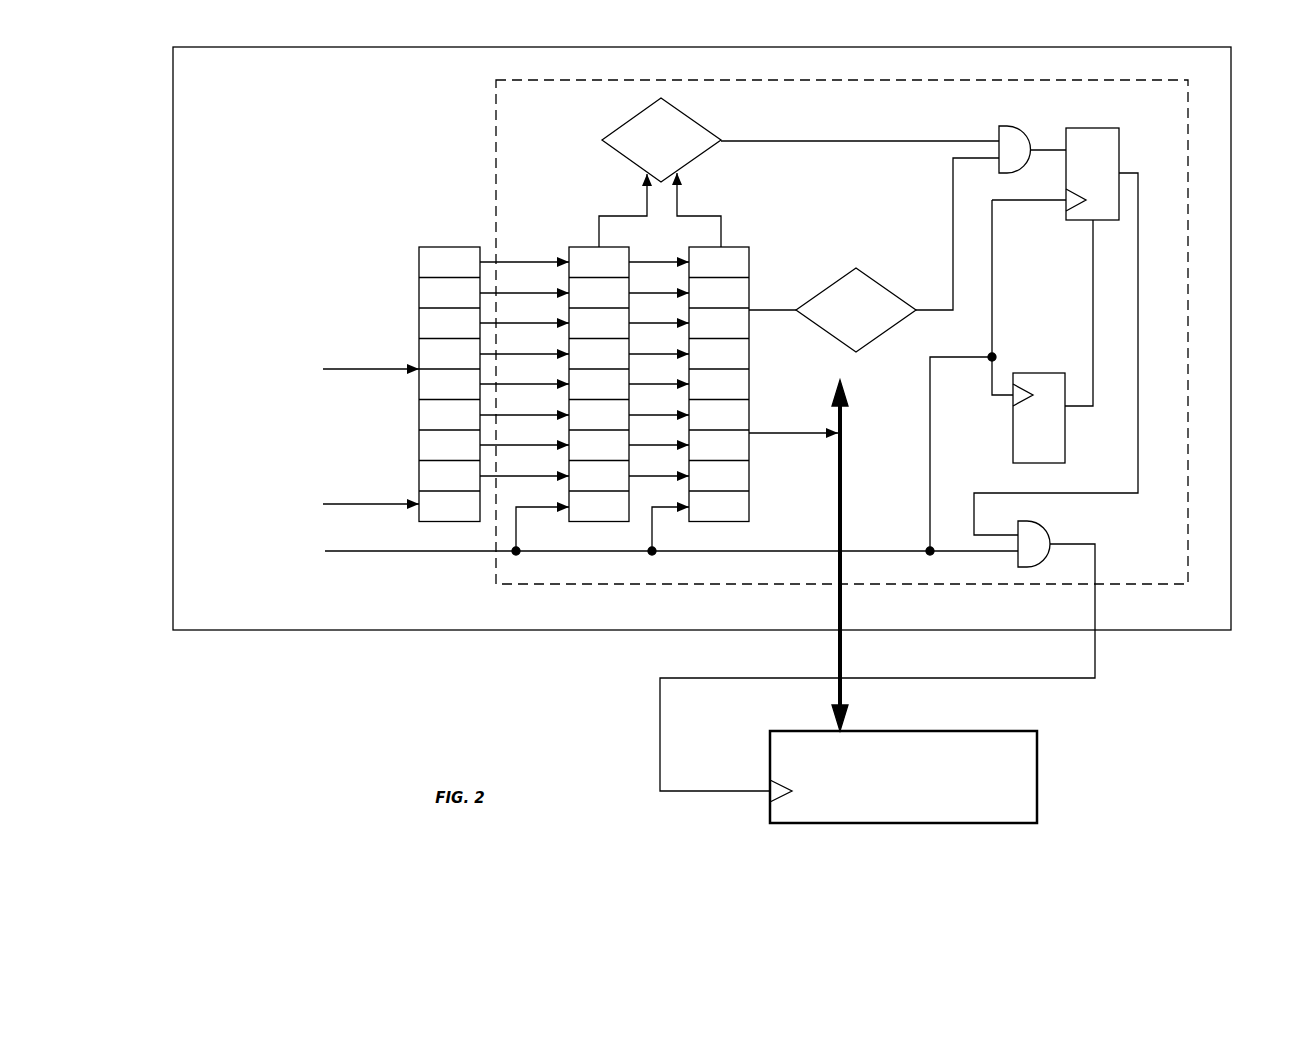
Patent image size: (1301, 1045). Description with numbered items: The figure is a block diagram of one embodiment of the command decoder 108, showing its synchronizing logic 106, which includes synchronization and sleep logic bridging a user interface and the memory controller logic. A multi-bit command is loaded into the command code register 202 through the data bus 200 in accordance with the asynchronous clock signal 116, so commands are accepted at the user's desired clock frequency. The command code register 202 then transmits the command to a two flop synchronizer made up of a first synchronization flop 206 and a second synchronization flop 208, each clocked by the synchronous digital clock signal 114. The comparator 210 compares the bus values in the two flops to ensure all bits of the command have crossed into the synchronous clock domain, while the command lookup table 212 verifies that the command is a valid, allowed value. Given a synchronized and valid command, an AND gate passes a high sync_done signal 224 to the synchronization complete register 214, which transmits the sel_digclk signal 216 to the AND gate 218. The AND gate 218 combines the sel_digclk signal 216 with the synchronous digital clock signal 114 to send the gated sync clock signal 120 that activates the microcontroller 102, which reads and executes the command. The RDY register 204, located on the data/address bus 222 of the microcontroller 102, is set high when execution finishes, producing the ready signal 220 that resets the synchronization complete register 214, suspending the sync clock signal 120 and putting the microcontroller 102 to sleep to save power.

The command decoder 108 is at (702, 338).
The synchronizing logic 106 is at (1190, 205).
The command code register 202 is at (440, 246).
The data bus 200 is at (346, 368).
The asynchronous clock signal 116 is at (371, 503).
The synchronous digital clock signal 114 is at (443, 552).
The first synchronization flop 206 is at (587, 247).
The second synchronization flop 208 is at (738, 247).
The comparator 210 is at (699, 128).
The command lookup table 212 is at (880, 286).
The sync_done signal 224 is at (1046, 155).
The synchronization complete register 214 is at (1100, 128).
The ready signal 220 is at (1092, 307).
The sel_digclk signal 216 is at (1139, 329).
The RDY register 204 is at (1026, 372).
The AND gate 218 is at (1045, 531).
The sync clock signal 120 is at (783, 678).
The data/address bus 222 is at (821, 547).
The microcontroller 102 is at (903, 777).